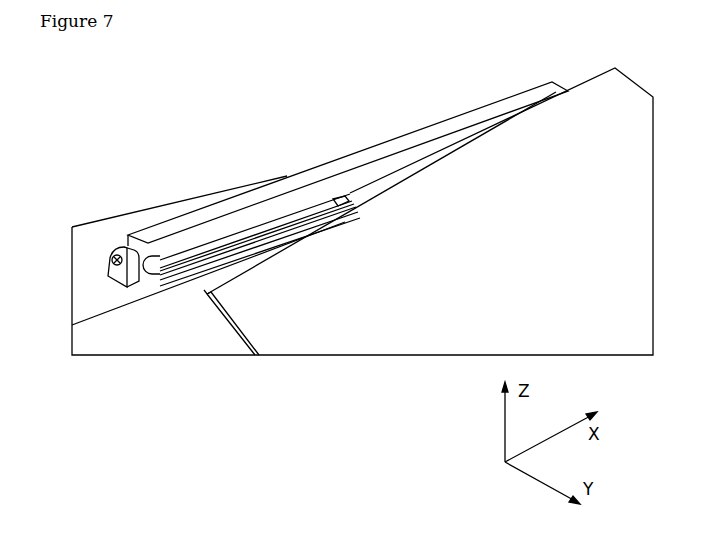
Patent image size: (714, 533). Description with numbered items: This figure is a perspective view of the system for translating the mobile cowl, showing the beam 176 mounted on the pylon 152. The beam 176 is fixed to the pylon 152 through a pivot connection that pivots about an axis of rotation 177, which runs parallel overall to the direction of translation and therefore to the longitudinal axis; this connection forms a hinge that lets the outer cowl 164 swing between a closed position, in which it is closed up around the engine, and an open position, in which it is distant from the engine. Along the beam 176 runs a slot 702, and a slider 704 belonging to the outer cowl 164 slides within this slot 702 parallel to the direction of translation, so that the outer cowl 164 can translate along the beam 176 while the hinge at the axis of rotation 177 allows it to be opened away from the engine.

The pylon 152 is at (78, 330).
The outer cowl 164 is at (516, 257).
The beam 176 is at (250, 213).
The axis of rotation 177 is at (104, 266).
The slot 702 is at (157, 267).
The slider 704 is at (336, 199).